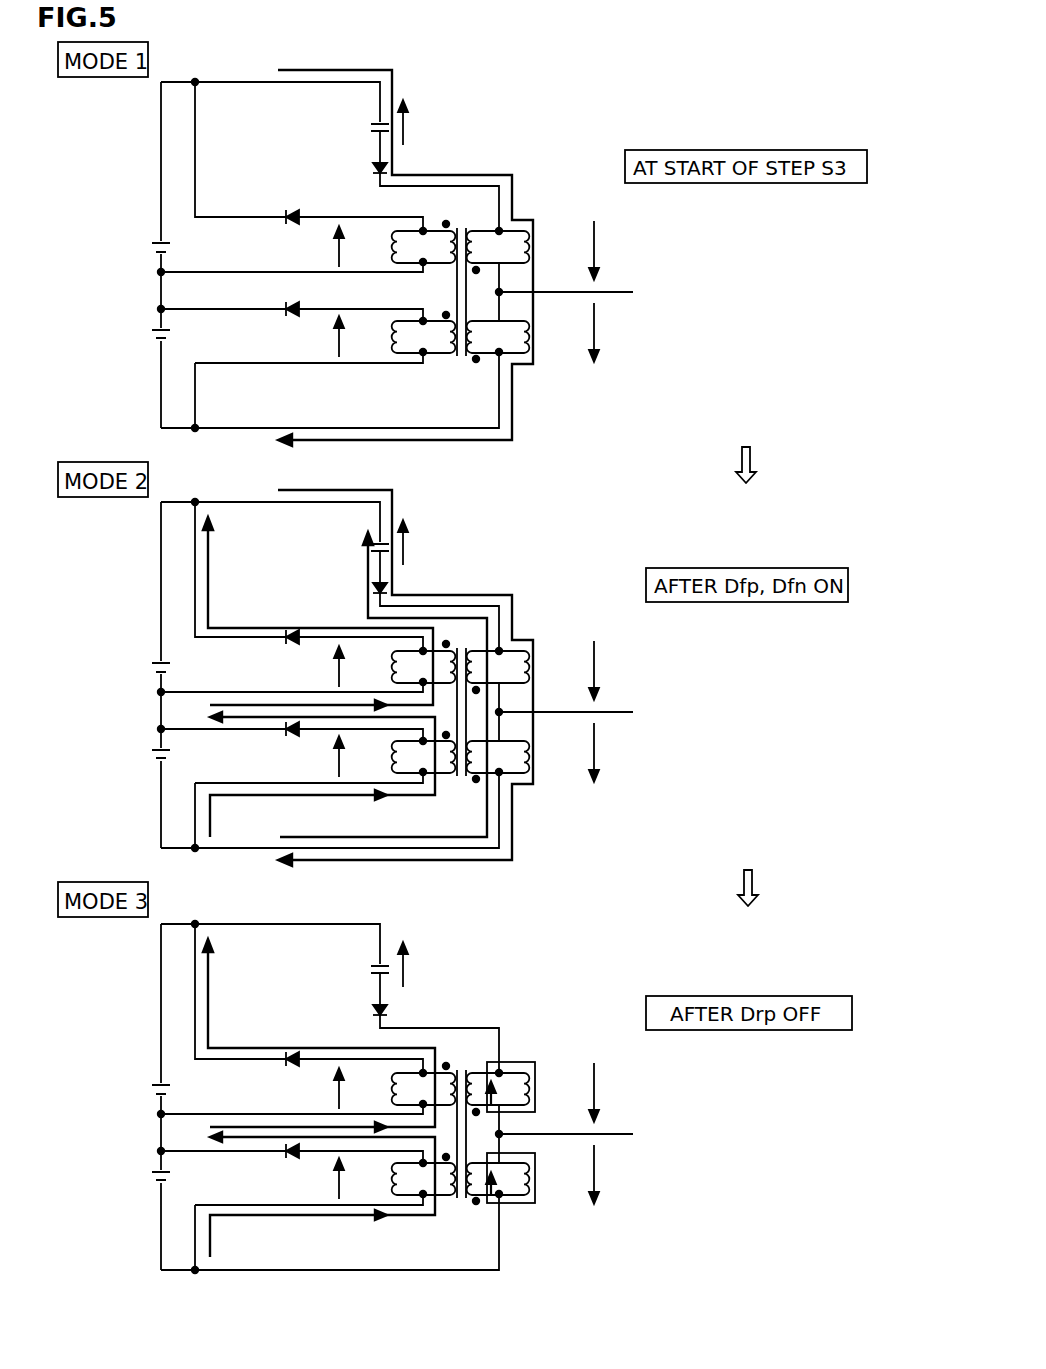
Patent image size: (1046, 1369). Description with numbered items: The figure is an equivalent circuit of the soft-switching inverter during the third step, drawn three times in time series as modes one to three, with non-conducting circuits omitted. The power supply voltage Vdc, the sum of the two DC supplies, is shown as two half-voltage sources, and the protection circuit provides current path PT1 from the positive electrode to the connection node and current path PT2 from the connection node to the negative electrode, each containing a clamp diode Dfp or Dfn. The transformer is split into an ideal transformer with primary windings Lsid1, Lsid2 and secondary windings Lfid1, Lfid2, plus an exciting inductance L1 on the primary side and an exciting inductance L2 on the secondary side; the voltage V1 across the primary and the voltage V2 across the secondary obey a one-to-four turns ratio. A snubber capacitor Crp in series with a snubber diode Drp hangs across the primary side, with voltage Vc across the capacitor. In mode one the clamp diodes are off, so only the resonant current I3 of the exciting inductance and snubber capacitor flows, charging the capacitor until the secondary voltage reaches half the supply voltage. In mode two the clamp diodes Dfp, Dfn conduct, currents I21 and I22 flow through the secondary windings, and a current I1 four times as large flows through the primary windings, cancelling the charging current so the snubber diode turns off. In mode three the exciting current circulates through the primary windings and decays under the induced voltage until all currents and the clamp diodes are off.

The snubber capacitor Crp is at (372, 124).
The snubber diode Drp is at (389, 168).
The clamp diode Dfp is at (288, 224).
The clamp diode Dfn is at (288, 316).
The current path PT1 is at (255, 271).
The current path PT2 is at (255, 311).
The exciting inductance L1 is at (530, 250).
The exciting inductance L2 is at (391, 248).
The secondary winding Lfid1 is at (428, 229).
The primary winding Lsid1 is at (484, 229).
The secondary winding Lfid2 is at (440, 354).
The primary winding Lsid2 is at (487, 354).
The voltage at the primary winding V1 is at (606, 712).
The voltage at the secondary winding V2 is at (326, 712).
The voltage at snubber capacitor Vc is at (414, 543).
The power supply voltage Vdc is at (150, 246).
The resonant current I3 is at (320, 71).
The current I21 is at (319, 824).
The current I22 is at (322, 986).
The current I1 is at (383, 684).